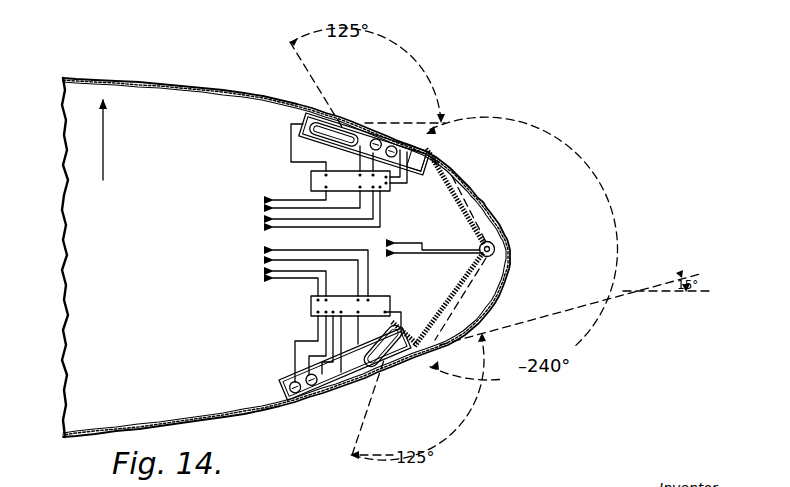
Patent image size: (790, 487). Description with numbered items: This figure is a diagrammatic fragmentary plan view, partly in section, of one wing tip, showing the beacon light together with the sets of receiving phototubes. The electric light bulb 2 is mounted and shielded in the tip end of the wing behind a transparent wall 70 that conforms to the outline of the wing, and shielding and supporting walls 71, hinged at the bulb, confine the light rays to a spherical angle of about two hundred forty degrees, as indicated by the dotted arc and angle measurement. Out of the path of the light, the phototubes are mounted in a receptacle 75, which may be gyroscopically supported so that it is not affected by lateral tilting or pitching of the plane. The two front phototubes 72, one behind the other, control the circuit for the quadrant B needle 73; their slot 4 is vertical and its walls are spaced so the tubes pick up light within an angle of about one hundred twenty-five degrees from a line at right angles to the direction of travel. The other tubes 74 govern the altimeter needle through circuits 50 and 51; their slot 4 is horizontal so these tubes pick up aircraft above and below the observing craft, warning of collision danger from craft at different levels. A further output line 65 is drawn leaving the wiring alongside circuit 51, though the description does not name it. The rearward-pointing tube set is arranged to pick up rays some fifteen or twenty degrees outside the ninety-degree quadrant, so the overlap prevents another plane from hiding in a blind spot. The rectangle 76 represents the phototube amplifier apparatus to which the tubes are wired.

The light bulb 2 is at (496, 245).
The slot 4 is at (376, 137).
The circuit 50 is at (265, 225).
The circuit 51 is at (265, 276).
The signal output 65 is at (265, 256).
The transparent wall 70 is at (493, 208).
The shielding and supporting walls 71 is at (452, 198).
The front phototubes 72 is at (331, 116).
The quadrant B needle 73 is at (265, 204).
The phototubes 74 is at (395, 146).
The receptacle 75 is at (331, 141).
The phototube amplifier apparatus 76 is at (311, 179).